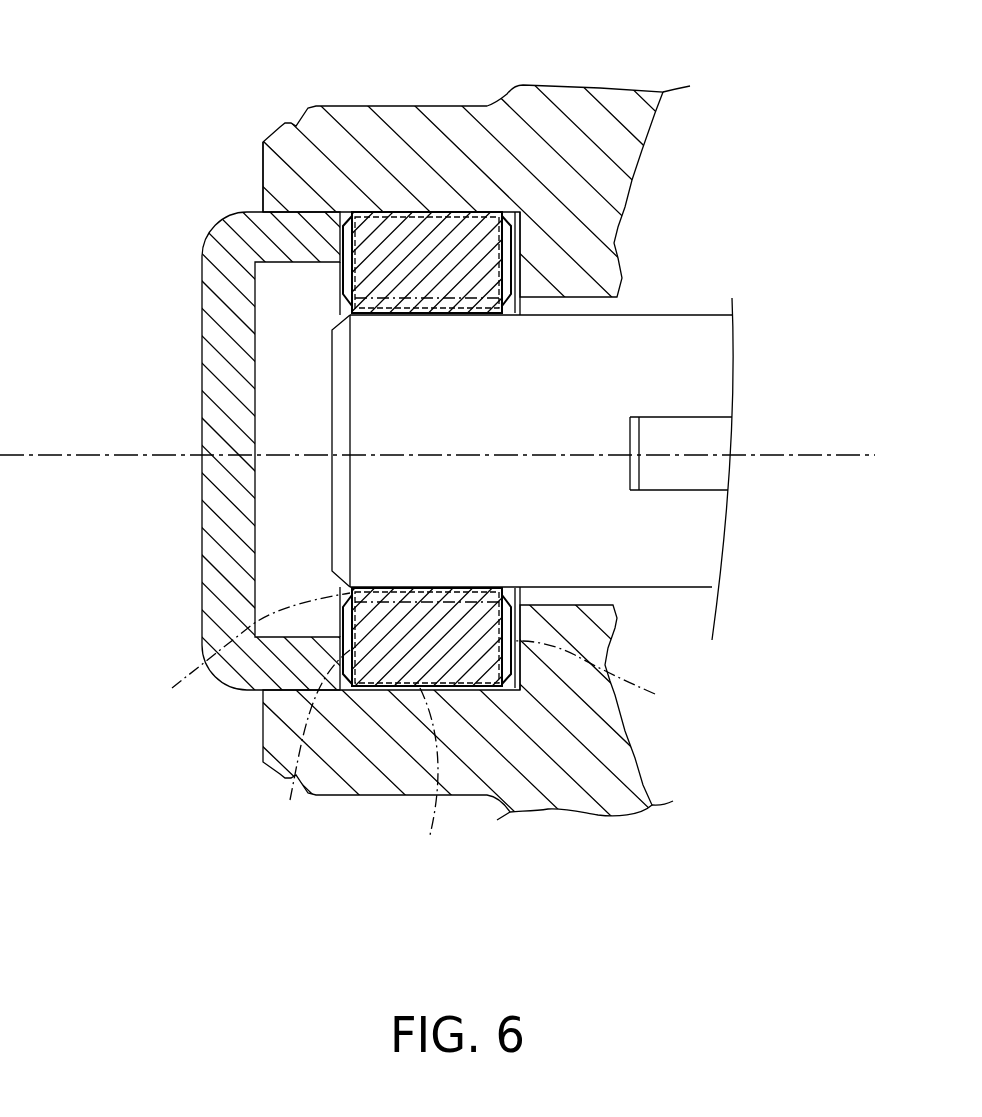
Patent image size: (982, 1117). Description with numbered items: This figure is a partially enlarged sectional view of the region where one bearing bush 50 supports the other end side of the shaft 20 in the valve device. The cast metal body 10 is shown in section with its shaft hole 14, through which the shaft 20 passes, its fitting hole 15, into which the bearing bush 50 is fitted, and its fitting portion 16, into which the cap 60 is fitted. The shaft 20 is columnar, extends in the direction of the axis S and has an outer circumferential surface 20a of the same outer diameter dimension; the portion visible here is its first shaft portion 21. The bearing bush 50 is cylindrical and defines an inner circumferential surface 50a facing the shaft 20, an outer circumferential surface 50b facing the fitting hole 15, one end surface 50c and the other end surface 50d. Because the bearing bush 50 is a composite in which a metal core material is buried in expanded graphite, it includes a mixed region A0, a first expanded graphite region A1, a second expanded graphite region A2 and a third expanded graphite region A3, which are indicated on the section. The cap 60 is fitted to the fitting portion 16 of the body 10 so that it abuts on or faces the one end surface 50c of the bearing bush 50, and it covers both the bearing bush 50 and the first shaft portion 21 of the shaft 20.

The body 10 is at (297, 111).
The shaft hole 14 is at (601, 604).
The fitting hole 15 is at (508, 213).
The fitting portion 16 is at (272, 228).
The shaft 20 is at (328, 488).
The outer circumferential surface 20a is at (541, 451).
The first shaft portion 21 is at (437, 426).
The bearing bush 50 is at (463, 210).
The inner circumferential surface 50a is at (437, 316).
The outer circumferential surface 50b is at (425, 190).
The one end surface 50c is at (240, 222).
The other end surface 50d is at (513, 264).
The cap 60 is at (200, 340).
The axis S is at (767, 455).
The mixed region A0 is at (429, 777).
The first expanded graphite region A1 is at (245, 652).
The second expanded graphite region A2 is at (301, 745).
The third expanded graphite region A3 is at (603, 676).